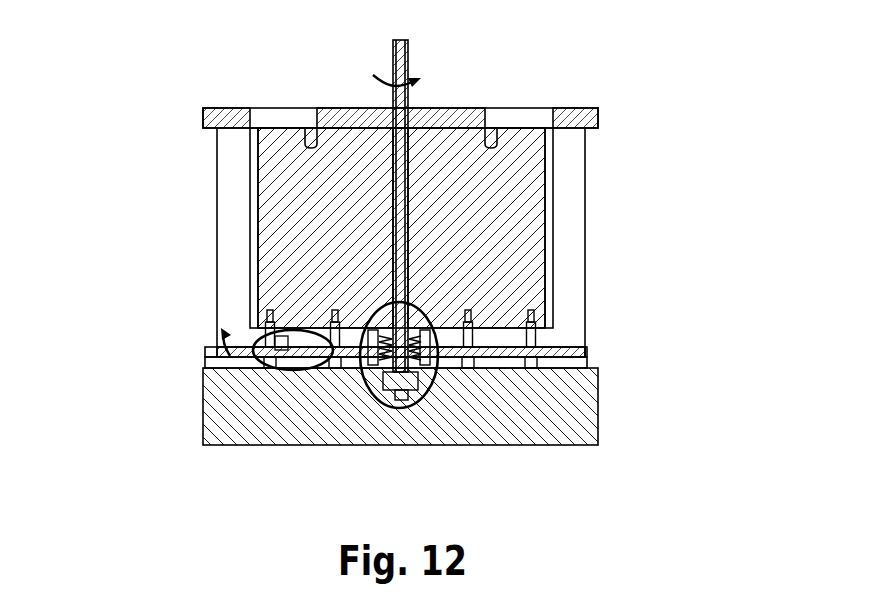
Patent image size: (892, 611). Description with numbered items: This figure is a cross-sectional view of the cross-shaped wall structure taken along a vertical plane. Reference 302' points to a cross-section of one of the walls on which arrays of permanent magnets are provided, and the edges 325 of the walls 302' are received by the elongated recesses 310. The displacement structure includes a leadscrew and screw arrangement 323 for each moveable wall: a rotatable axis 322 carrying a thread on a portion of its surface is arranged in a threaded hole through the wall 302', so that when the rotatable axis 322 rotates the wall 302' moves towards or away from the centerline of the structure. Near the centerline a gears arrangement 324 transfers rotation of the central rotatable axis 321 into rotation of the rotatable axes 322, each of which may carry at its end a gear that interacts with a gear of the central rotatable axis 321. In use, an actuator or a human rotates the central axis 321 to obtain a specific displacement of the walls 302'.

The wall 302' is at (416, 228).
The central rotatable axis 321 is at (400, 52).
The elongated recesses 310 is at (215, 368).
The rotatable axis 322 is at (240, 354).
The leadscrew and screw arrangement 323 is at (305, 362).
The gears arrangement 324 is at (434, 394).
The edges 325 is at (350, 365).